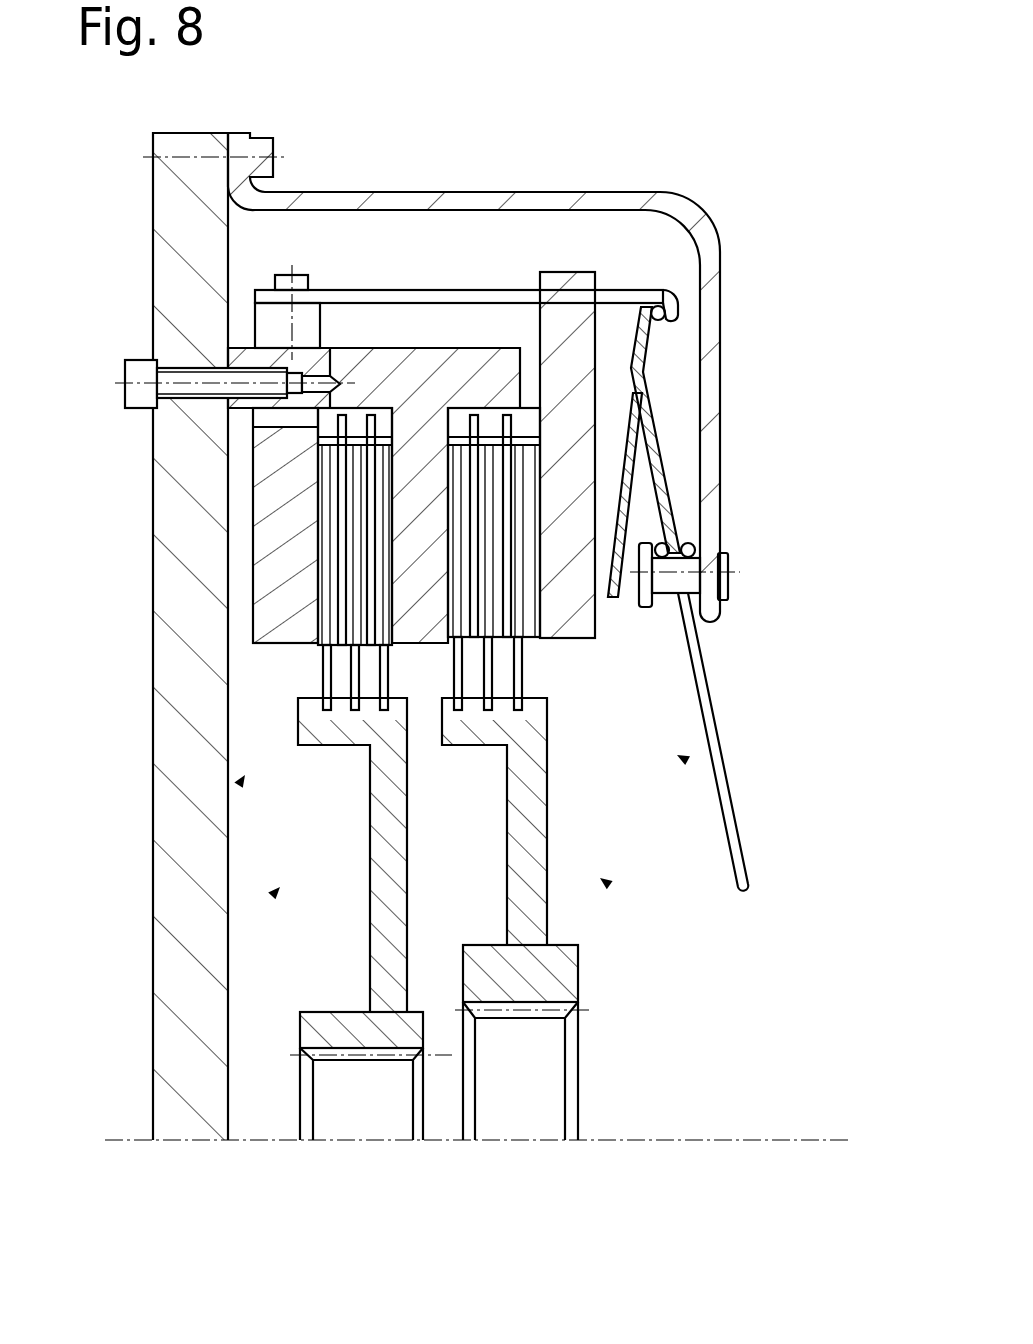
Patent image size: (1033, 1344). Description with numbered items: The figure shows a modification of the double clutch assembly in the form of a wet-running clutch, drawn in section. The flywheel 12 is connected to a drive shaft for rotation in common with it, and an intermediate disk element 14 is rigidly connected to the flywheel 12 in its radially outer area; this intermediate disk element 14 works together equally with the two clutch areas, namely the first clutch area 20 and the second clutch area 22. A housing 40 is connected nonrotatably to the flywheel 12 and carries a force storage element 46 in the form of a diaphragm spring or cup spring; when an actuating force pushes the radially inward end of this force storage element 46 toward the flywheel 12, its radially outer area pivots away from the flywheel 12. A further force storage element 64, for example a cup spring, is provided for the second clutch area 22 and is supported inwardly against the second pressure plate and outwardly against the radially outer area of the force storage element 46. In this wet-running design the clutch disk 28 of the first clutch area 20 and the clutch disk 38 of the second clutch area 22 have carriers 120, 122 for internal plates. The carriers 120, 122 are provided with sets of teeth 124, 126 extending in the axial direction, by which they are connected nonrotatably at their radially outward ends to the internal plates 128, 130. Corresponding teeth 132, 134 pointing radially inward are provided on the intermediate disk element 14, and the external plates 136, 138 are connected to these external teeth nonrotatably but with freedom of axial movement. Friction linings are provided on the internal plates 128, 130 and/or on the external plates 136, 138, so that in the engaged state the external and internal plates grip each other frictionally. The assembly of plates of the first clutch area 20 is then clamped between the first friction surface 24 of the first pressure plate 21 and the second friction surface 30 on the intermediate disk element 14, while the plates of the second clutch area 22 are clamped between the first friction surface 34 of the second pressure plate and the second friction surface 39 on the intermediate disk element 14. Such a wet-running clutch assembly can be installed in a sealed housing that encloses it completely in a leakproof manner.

The flywheel 12 is at (153, 1027).
The intermediate disk element 14 is at (455, 365).
The first clutch area 20 is at (245, 775).
The first pressure plate 21 is at (273, 450).
The second clutch area 22 is at (690, 762).
The first friction surface of the first clutch area 24 is at (390, 557).
The clutch disk of the first clutch area 28 is at (280, 887).
The second friction surface of the first clutch area 30 is at (318, 622).
The first friction surface of the second clutch area 34 is at (527, 567).
The clutch disk of the second clutch area 38 is at (602, 880).
The second friction surface of the second clutch area 39 is at (448, 620).
The housing 40 is at (722, 293).
The force storage element 46 is at (708, 708).
The force storage element 64 is at (637, 463).
The carrier 120 is at (372, 938).
The carrier 122 is at (530, 927).
The set of teeth 124 is at (310, 707).
The set of teeth 126 is at (520, 710).
The internal plates 128 is at (325, 660).
The internal plates 130 is at (523, 667).
The teeth 132 is at (353, 413).
The teeth 134 is at (445, 395).
The external plates 136 is at (322, 547).
The external plates 138 is at (520, 425).